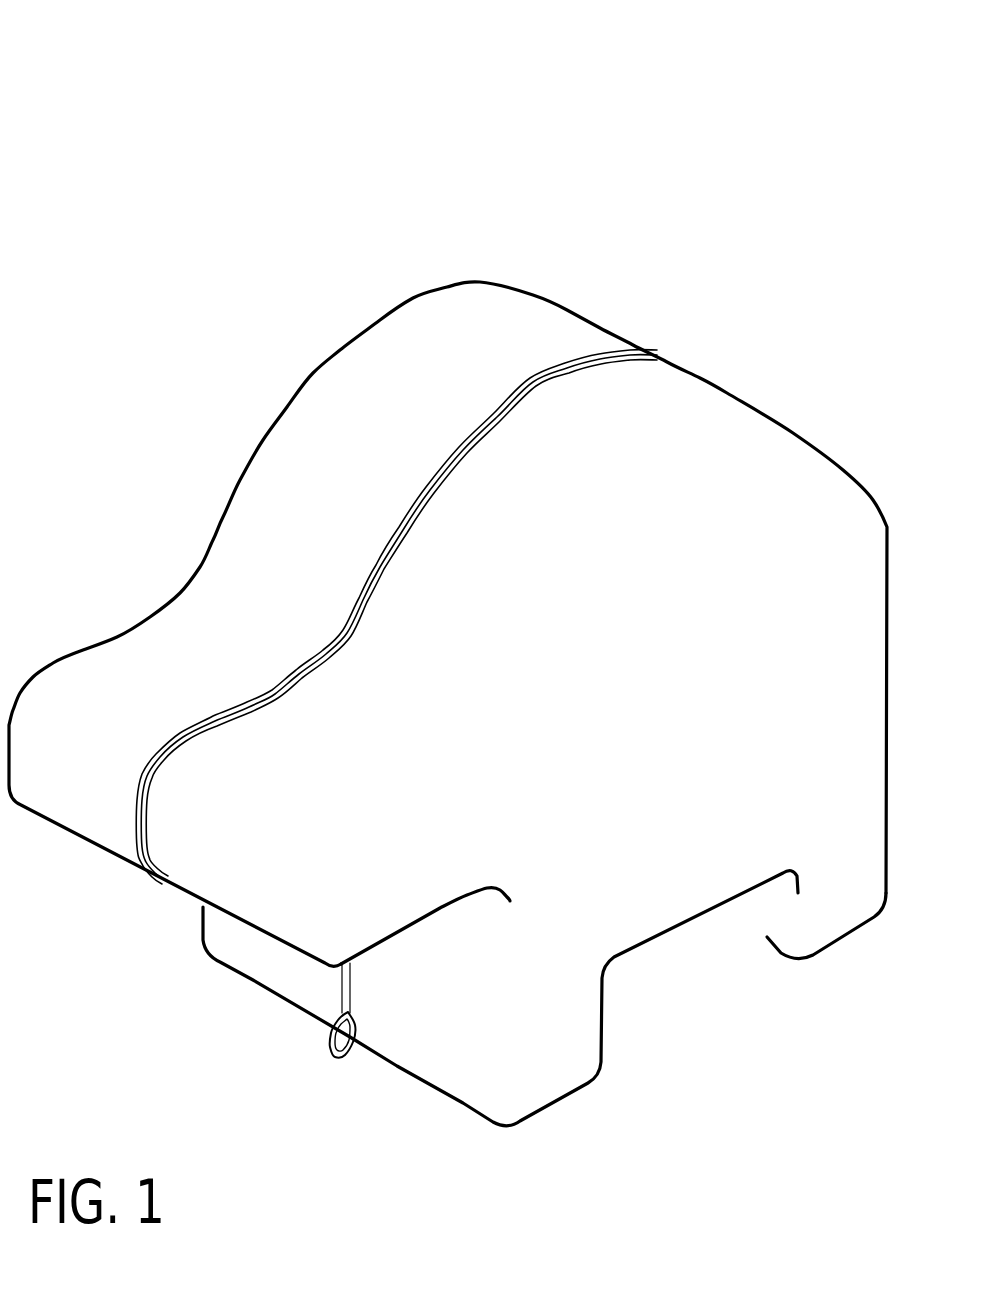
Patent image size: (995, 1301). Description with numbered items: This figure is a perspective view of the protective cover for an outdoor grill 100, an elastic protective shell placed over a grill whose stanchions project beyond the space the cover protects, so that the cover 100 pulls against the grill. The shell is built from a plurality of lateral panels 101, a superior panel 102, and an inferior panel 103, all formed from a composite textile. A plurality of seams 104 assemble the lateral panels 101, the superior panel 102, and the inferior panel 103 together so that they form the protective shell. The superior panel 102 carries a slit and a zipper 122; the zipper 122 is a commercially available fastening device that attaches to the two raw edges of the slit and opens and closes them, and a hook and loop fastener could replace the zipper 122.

The protective cover for an outdoor grill 100 is at (448, 587).
The plurality of lateral panels 101 is at (592, 910).
The superior panel 102 is at (415, 1010).
The inferior panel 103 is at (750, 903).
The plurality of seams 104 is at (440, 908).
The zipper 122 is at (598, 358).